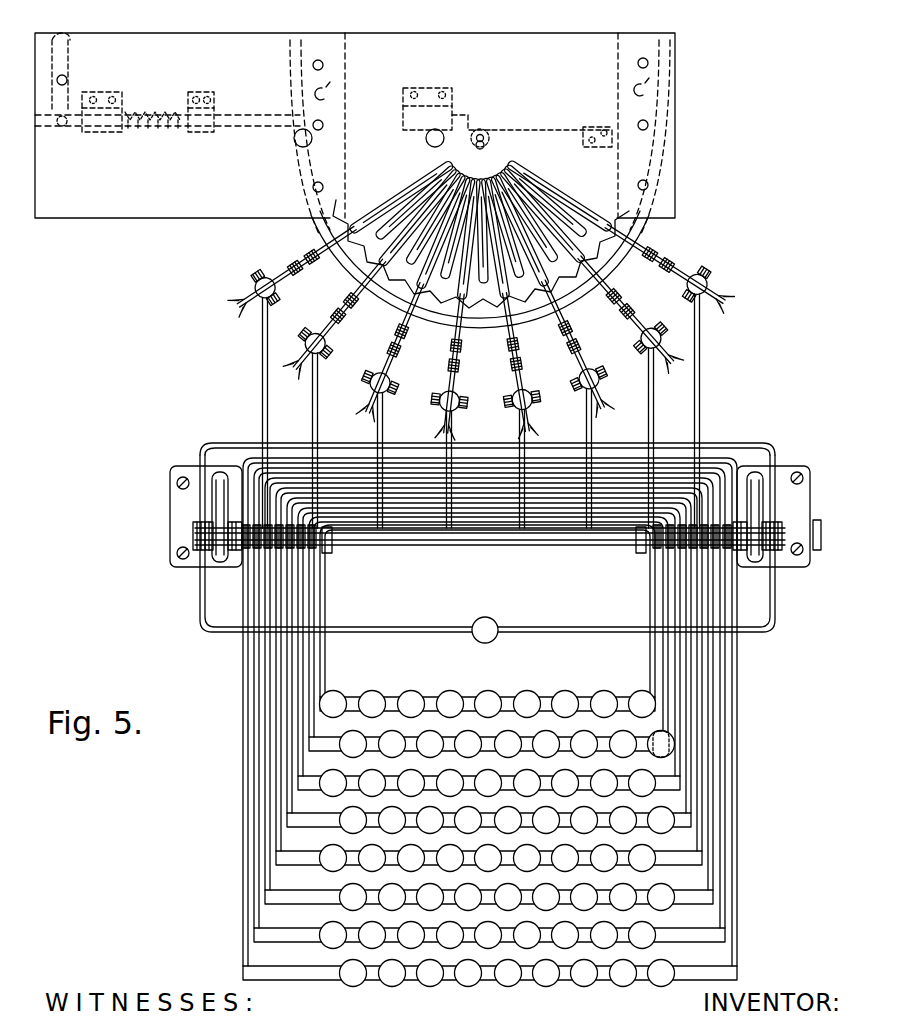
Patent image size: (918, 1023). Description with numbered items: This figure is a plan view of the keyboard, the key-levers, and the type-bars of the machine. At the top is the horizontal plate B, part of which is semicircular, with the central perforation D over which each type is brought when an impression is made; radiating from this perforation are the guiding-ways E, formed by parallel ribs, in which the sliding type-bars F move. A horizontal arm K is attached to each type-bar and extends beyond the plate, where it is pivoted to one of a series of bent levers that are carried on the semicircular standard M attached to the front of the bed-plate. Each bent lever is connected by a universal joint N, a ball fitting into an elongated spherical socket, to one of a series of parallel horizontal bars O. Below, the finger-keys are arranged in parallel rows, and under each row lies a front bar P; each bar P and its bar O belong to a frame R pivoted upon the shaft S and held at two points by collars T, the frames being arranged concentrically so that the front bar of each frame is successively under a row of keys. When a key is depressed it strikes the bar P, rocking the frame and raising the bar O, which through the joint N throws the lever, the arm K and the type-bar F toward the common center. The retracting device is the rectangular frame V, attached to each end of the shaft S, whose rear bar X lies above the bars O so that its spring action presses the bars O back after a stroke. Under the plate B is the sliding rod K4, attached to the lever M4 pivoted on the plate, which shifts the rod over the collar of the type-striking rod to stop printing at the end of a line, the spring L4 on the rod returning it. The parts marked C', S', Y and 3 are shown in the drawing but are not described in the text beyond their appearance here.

The horizontal plate B is at (355, 134).
The guide piece C' is at (477, 92).
The perforation D is at (484, 132).
The guiding-ways E is at (383, 196).
The type-bar F is at (467, 154).
The horizontal arm K is at (481, 329).
The sliding horizontal rod K4 is at (426, 114).
The spring L4 is at (148, 107).
The semicircular standard M is at (312, 229).
The lever M4 is at (167, 79).
The universal joint N is at (276, 290).
The horizontal bar O is at (268, 410).
The front bar P is at (432, 694).
The frame R is at (244, 600).
The shaft S is at (489, 548).
The shaft end S' is at (804, 534).
The collar T is at (568, 198).
The rectangular frame V is at (776, 610).
The rear bar X is at (732, 443).
The space key Y is at (492, 622).
The key 3 is at (704, 726).